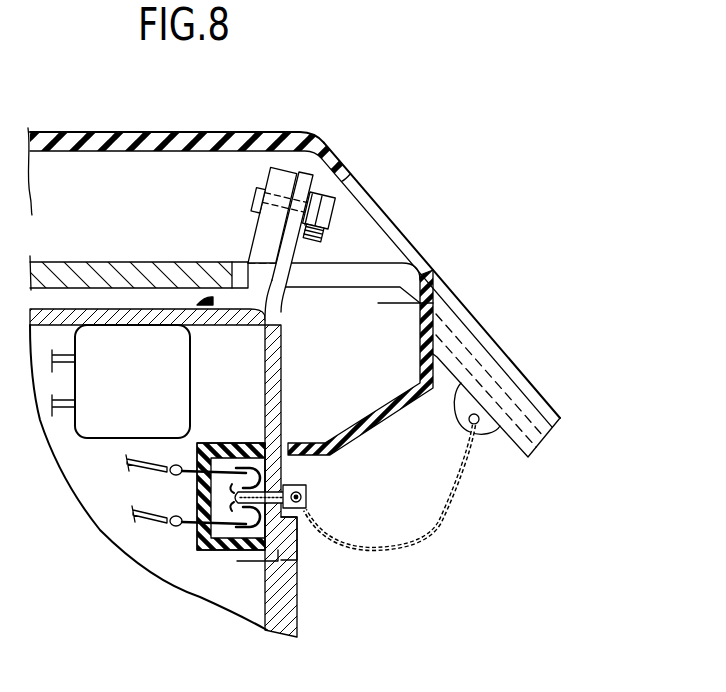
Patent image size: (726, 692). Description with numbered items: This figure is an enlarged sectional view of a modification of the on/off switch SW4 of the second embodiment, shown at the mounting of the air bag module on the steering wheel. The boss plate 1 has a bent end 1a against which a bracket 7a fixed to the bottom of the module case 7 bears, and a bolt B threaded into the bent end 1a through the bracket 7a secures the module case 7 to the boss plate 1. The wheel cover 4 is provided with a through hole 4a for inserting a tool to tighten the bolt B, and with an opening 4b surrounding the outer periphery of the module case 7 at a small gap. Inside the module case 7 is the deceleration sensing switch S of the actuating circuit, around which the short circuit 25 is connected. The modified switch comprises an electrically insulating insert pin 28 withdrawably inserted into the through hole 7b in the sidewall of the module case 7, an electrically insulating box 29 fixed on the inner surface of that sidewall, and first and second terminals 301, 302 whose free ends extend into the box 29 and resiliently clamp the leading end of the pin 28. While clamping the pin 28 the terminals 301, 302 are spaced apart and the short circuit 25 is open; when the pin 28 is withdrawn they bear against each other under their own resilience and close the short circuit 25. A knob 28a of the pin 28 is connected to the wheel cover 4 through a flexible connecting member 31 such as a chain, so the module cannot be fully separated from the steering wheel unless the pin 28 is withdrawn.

The boss plate 1 is at (64, 261).
The bent end 1a is at (272, 180).
The wheel cover 4 is at (214, 131).
The through hole 4a is at (345, 175).
The opening 4b is at (290, 450).
The module case 7 is at (284, 382).
The bracket 7a is at (302, 178).
The through hole 7b is at (289, 515).
The bolt B is at (329, 216).
The deceleration sensing switch S is at (136, 396).
The short circuit 25 is at (145, 514).
The insert pin 28 is at (307, 504).
The knob 28a is at (306, 494).
The box 29 is at (199, 550).
The first terminal 301 is at (240, 466).
The second terminal 302 is at (234, 551).
The flexible connecting member 31 is at (417, 551).
The on/off switch SW4 is at (308, 536).